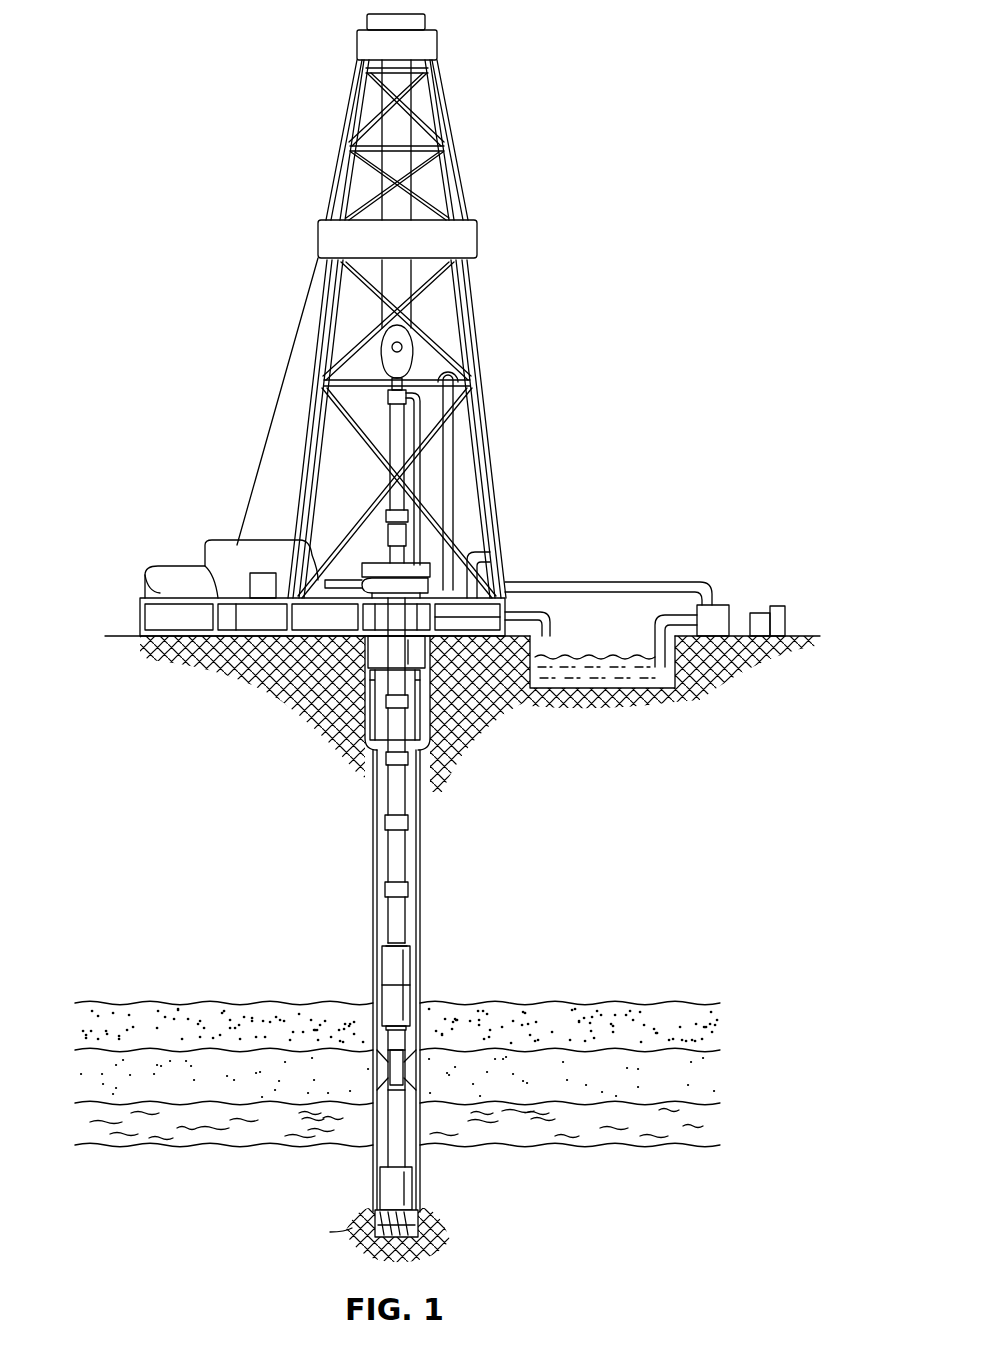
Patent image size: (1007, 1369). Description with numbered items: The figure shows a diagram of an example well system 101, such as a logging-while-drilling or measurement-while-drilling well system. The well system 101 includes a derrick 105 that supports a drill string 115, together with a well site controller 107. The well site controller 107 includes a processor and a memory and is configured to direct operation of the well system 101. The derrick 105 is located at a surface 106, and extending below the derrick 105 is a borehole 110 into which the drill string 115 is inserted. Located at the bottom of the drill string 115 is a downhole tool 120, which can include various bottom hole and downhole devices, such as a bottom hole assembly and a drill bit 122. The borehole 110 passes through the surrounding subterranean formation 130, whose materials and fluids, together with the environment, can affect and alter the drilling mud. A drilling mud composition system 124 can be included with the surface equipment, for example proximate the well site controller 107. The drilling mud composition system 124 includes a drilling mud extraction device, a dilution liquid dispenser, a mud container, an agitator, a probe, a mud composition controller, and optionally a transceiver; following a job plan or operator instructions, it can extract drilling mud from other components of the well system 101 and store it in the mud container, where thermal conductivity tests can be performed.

The well system 101 is at (175, 117).
The derrick 105 is at (488, 460).
The surface 106 is at (122, 633).
The well site controller 107 is at (262, 617).
The borehole 110 is at (419, 893).
The drill string 115 is at (406, 862).
The downhole tool 120 is at (461, 1165).
The drill bit 122 is at (374, 1222).
The drilling mud composition system 124 is at (248, 588).
The subterranean formation 130 is at (731, 1075).